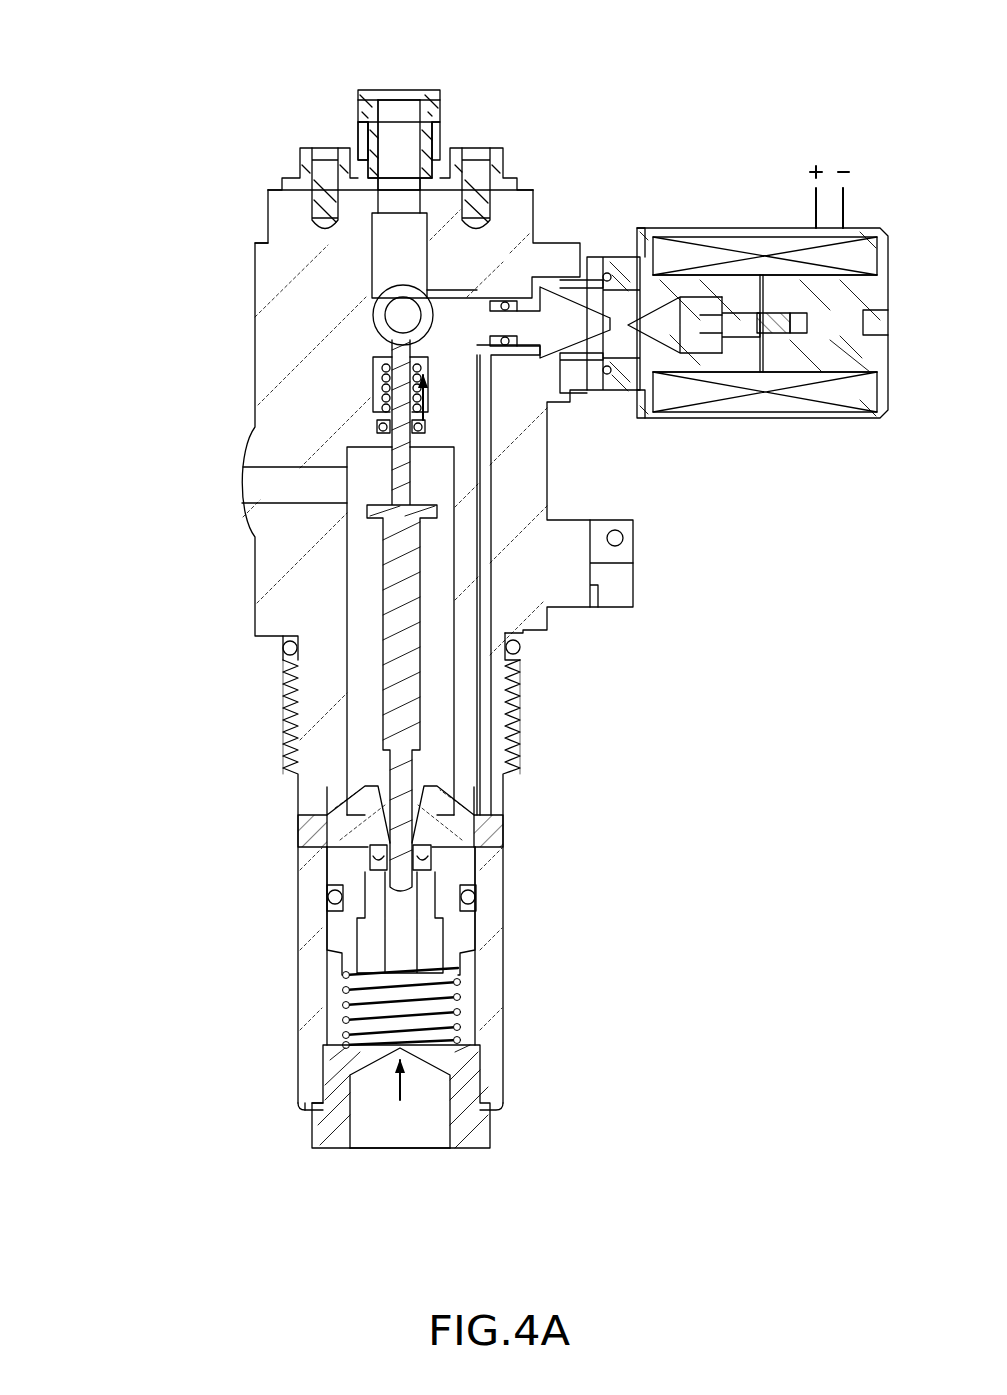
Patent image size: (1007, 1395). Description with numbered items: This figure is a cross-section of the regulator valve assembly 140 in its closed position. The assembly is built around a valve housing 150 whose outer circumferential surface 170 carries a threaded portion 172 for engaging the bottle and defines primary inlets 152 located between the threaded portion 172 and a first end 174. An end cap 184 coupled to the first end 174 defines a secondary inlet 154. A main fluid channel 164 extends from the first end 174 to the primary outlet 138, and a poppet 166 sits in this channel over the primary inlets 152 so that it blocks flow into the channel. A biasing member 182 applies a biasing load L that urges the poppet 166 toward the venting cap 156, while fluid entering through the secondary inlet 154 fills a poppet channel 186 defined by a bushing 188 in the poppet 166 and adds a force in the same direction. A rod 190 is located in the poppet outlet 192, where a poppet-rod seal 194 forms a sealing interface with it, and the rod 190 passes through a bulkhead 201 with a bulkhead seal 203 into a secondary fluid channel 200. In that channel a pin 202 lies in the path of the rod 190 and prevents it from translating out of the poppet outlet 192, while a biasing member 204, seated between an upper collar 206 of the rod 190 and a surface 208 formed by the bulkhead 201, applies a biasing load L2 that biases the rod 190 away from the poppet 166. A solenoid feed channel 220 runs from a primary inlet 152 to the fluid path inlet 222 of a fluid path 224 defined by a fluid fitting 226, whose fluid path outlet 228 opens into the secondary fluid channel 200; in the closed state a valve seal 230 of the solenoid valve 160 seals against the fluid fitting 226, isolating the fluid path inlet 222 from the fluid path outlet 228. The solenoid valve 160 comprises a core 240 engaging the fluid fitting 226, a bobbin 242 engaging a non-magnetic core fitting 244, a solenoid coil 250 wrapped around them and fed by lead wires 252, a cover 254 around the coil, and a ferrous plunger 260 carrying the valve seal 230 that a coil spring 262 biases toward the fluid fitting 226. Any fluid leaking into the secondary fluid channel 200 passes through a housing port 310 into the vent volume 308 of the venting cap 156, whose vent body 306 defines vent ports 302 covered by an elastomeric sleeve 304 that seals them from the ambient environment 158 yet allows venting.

The regulator valve assembly 140 is at (140, 128).
The ambient environment 158 is at (400, 146).
The venting cap 156 is at (438, 86).
The vent body 306 is at (415, 95).
The vent volume 308 is at (400, 125).
The elastomeric sleeve 304 is at (362, 130).
The vent port 302 is at (428, 137).
The housing port 310 is at (395, 205).
The secondary fluid channel 200 is at (397, 260).
The pin 202 is at (402, 318).
The valve housing 150 is at (300, 609).
The primary outlet 138 is at (292, 485).
The biasing member 204 is at (390, 382).
The upper collar 206 is at (388, 362).
The surface 208 is at (385, 398).
The biasing load L2 is at (440, 391).
The rod 190 is at (400, 602).
The bulkhead seal 203 is at (388, 433).
The bulkhead 201 is at (430, 443).
The main fluid channel 164 is at (432, 722).
The solenoid feed channel 220 is at (492, 507).
The fluid path outlet 228 is at (490, 302).
The fluid path inlet 222 is at (525, 360).
The fluid path 224 is at (590, 390).
The valve seal 230 is at (630, 375).
The fluid fitting 226 is at (602, 265).
The core 240 is at (650, 236).
The solenoid coil 250 is at (797, 240).
The cover 254 is at (840, 418).
The solenoid valve 160 is at (830, 160).
The lead wires 252 is at (848, 190).
The bobbin 242 is at (765, 323).
The core fitting 244 is at (752, 285).
The coil spring 262 is at (775, 335).
The plunger 260 is at (703, 345).
The threaded portion 172 is at (272, 660).
The primary inlets 152 is at (298, 828).
The poppet outlet 192 is at (424, 806).
The poppet-rod seal 194 is at (433, 847).
The poppet 166 is at (350, 863).
The bushing 188 is at (372, 935).
The poppet channel 186 is at (405, 947).
The outer circumferential surface 170 is at (297, 948).
The biasing member 182 is at (343, 1007).
The end cap 184 is at (340, 1138).
The first end 174 is at (310, 1128).
The secondary inlet 154 is at (420, 1152).
The biasing load L is at (399, 1094).